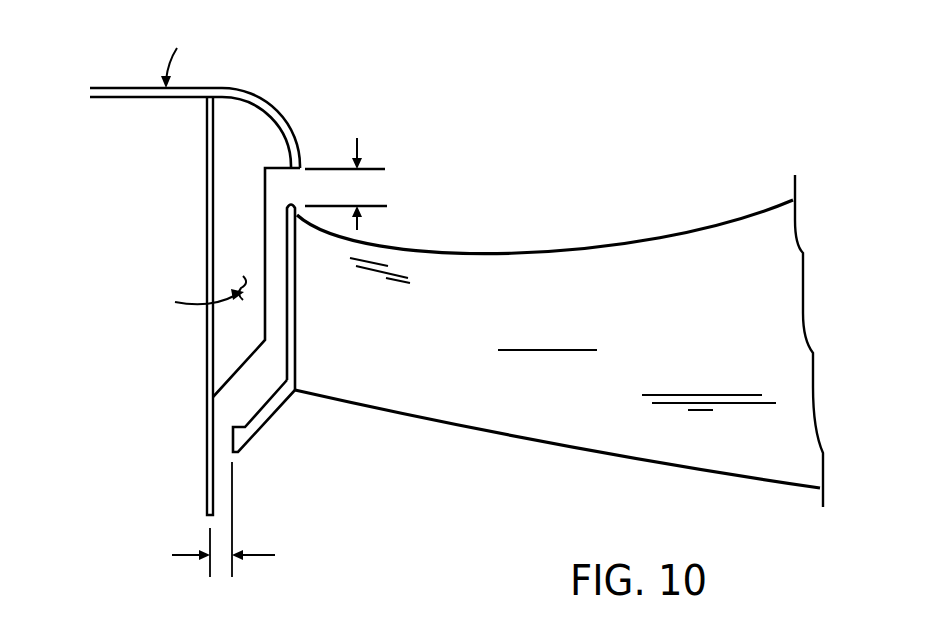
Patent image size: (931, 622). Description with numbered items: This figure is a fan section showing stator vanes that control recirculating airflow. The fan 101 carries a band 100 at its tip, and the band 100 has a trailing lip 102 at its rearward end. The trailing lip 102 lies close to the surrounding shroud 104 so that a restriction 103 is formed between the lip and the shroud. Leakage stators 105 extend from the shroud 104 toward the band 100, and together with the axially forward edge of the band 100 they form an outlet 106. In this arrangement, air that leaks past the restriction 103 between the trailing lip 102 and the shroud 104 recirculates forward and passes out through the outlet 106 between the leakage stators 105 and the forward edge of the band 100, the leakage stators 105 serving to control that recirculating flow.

The band 100 is at (297, 301).
The fan 101 is at (657, 198).
The trailing lip 102 is at (263, 428).
The restriction 103 is at (221, 456).
The shroud 104 is at (280, 115).
The leakage stators 105 is at (237, 172).
The outlet 106 is at (290, 194).